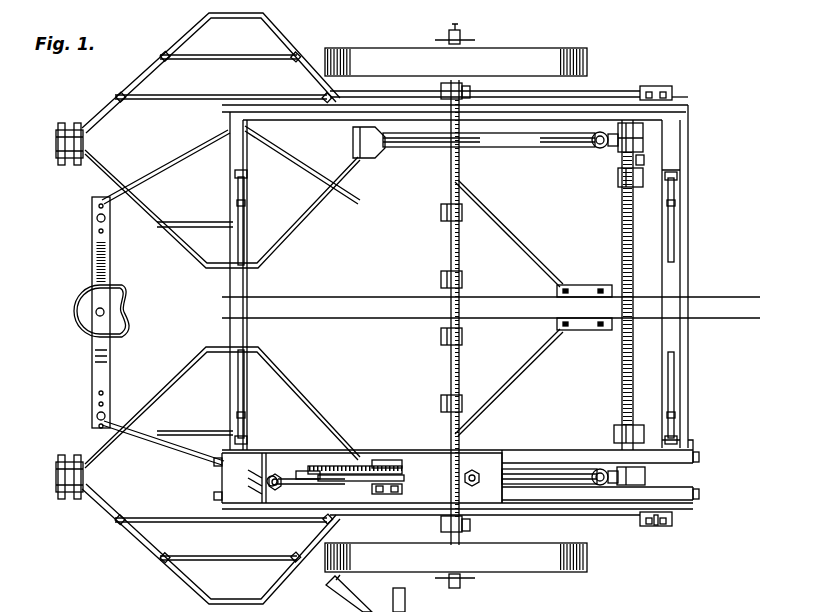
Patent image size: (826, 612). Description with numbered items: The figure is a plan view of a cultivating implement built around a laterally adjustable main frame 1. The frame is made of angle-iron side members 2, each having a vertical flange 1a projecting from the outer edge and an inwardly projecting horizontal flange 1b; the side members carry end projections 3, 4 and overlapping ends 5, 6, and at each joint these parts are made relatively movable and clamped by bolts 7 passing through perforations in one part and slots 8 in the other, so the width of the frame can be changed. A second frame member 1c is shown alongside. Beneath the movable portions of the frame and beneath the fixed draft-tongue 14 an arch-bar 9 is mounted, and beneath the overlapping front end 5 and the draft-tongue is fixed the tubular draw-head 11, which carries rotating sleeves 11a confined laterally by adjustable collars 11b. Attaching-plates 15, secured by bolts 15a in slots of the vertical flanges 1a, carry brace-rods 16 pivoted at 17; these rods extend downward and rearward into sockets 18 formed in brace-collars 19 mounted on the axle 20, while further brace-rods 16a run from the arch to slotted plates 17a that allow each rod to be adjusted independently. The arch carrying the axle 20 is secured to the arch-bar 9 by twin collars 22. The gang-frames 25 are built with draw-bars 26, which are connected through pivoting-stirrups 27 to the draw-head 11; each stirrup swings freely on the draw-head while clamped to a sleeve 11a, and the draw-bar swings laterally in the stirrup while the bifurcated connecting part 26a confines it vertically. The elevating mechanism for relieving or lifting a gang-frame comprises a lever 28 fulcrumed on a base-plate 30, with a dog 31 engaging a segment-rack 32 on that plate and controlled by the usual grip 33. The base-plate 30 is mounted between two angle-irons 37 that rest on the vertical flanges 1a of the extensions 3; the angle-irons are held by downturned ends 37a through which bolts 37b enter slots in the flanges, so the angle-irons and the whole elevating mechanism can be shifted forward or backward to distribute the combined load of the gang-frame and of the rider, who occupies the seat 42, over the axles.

The main frame 1 is at (578, 112).
The vertical flange 1a is at (690, 126).
The horizontal flange 1b is at (644, 162).
The frame inner bar 1c is at (244, 160).
The side members 2 is at (690, 106).
The end projection 3 is at (682, 150).
The end projection 4 is at (243, 126).
The overlapping front end 5 is at (682, 244).
The overlapping end piece 6 is at (228, 296).
The bolt 7 is at (668, 205).
The slot 8 is at (668, 245).
The arch-bar 9 is at (451, 180).
The draw-head 11 is at (622, 256).
The sleeve 11a is at (618, 425).
The adjustable collar 11b is at (620, 183).
The draft-tongue 14 is at (491, 307).
The attaching-plate 15 is at (660, 88).
The bolt 15a is at (649, 92).
The brace-rod 16 is at (562, 60).
The brace-rod 16a is at (522, 245).
The pivot 17 is at (655, 527).
The slotted plate 17a is at (580, 285).
The socket 18 is at (470, 90).
The brace-collar 19 is at (441, 90).
The axle 20 is at (460, 34).
The twin collar 22 is at (462, 212).
The gang-frame 25 is at (318, 202).
The draw-bar 26 is at (408, 147).
The bifurcated connecting part 26a is at (522, 147).
The pivoting-stirrup 27 is at (620, 150).
The lever 28 is at (356, 466).
The base-plate 30 is at (362, 478).
The dog 31 is at (332, 474).
The segment-rack 32 is at (395, 460).
The grip 33 is at (300, 484).
The angle-iron 37 is at (694, 492).
The downturned end 37a is at (700, 457).
The bolt 37b is at (696, 447).
The seat 42 is at (128, 298).